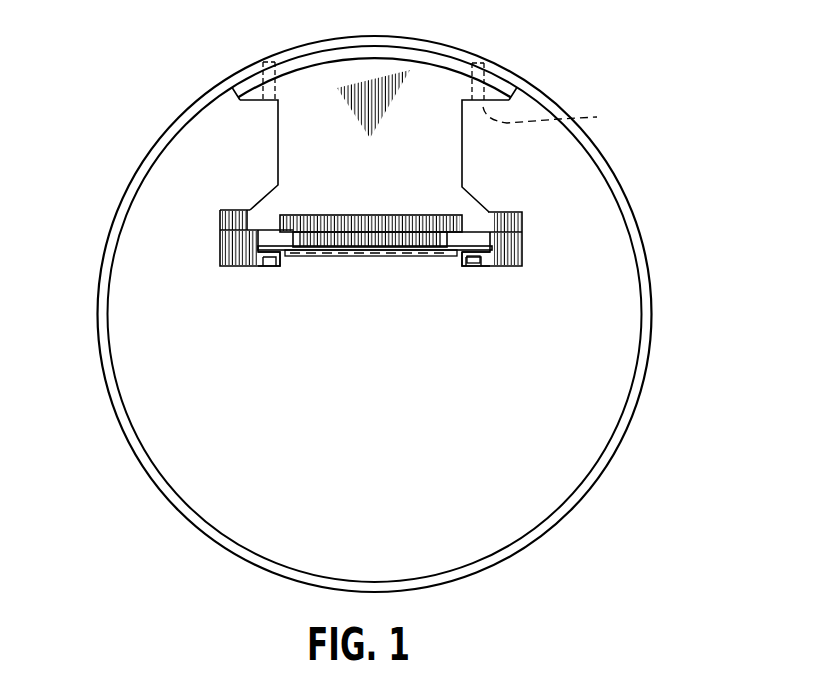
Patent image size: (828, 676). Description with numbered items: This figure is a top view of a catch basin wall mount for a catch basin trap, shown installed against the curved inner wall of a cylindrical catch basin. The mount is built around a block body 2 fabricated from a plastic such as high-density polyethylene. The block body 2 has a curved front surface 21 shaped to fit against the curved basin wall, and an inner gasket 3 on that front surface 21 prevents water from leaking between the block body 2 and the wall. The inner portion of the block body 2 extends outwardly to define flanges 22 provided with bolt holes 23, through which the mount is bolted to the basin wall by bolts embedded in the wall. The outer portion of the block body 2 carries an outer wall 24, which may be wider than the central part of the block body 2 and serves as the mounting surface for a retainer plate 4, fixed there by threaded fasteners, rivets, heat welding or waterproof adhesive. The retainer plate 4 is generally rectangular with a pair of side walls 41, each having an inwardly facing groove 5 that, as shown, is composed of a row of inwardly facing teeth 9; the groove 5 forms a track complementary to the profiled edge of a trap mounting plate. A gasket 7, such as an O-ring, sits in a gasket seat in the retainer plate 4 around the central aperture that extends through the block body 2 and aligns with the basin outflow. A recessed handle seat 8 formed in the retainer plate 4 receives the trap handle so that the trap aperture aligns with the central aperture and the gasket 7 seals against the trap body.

The block body 2 is at (384, 183).
The inner gasket 3 is at (297, 62).
The retainer plate 4 is at (368, 238).
The groove 5 is at (268, 266).
The gasket 7 is at (327, 250).
The handle seat 8 is at (393, 226).
The teeth 9 is at (470, 258).
The front surface 21 is at (453, 67).
The flanges 22 is at (515, 78).
The bolt holes 23 is at (559, 122).
The outer wall 24 is at (220, 210).
The side walls 41 is at (225, 253).